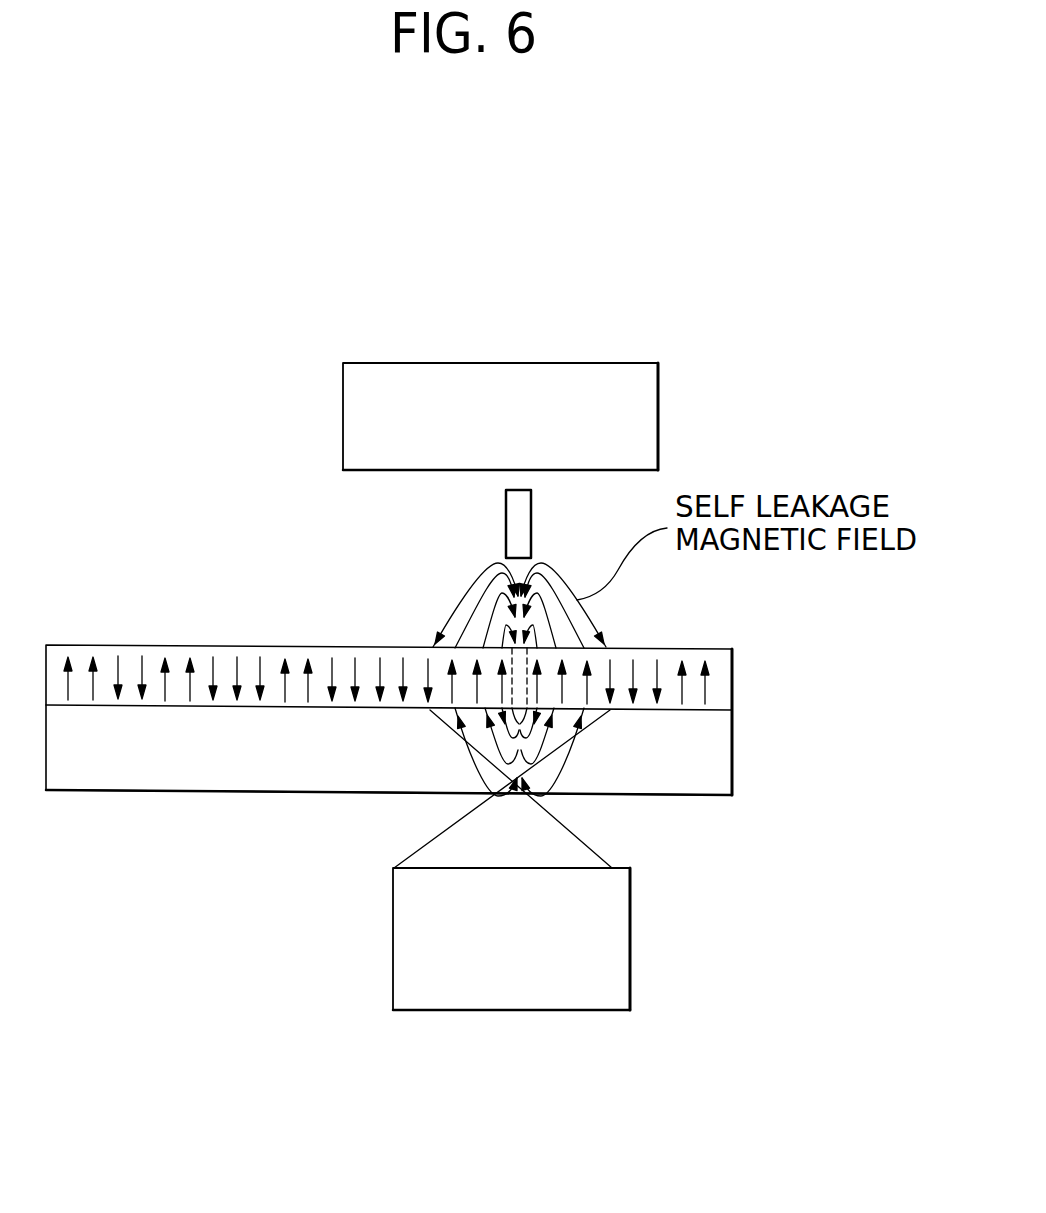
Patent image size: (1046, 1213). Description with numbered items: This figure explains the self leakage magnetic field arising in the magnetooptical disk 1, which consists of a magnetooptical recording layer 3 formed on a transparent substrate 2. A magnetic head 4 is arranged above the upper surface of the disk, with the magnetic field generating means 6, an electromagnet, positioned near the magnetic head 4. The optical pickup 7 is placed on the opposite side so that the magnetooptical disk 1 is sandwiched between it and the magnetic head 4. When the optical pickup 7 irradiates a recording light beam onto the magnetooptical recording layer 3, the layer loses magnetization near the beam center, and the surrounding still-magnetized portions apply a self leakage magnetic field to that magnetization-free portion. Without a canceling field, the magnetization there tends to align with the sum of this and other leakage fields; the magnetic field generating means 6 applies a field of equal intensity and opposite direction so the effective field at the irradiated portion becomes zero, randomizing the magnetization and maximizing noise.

The magnetooptical disk 1 is at (100, 646).
The transparent substrate 2 is at (720, 751).
The magnetooptical recording layer 3 is at (690, 668).
The magnetic head 4 is at (525, 517).
The magnetic field generating means 6 is at (658, 385).
The optical pickup 7 is at (620, 904).